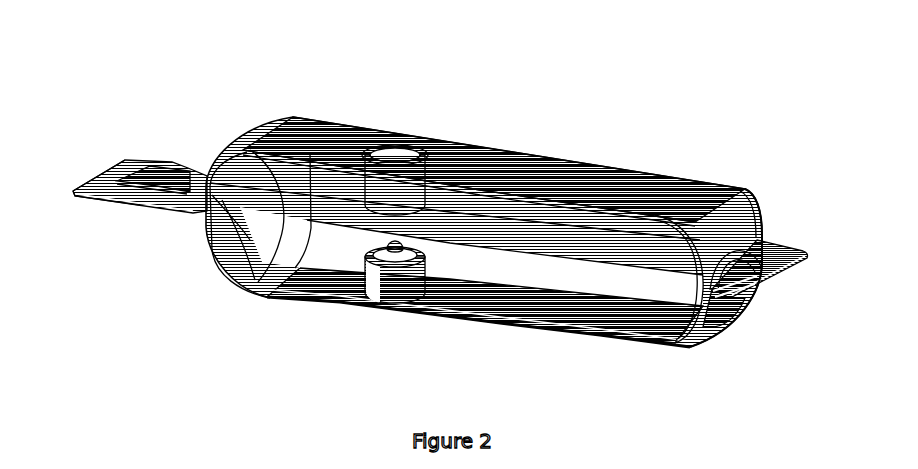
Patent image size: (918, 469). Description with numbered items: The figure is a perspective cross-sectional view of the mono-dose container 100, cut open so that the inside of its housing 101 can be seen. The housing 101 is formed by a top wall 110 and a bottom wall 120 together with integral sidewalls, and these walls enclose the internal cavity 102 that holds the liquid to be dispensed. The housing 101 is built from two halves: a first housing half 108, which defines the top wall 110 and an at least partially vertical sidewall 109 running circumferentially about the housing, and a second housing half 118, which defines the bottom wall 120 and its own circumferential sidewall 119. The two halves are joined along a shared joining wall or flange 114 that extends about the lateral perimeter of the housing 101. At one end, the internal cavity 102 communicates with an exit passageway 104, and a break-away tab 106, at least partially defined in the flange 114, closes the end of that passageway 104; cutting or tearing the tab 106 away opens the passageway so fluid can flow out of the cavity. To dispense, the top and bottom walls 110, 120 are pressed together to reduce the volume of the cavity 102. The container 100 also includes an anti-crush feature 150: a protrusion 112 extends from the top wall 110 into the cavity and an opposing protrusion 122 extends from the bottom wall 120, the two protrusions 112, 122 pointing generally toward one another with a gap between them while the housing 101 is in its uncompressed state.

The container 100 is at (633, 118).
The housing 101 is at (522, 175).
The top wall 110 is at (469, 188).
The internal cavity 102 is at (556, 280).
The passageway 104 is at (180, 186).
The break-away tab 106 is at (120, 170).
The first housing half 108 is at (743, 203).
The sidewall 109 is at (737, 224).
The protrusion 112 is at (395, 192).
The flange 114 is at (97, 183).
The second housing half 118 is at (757, 318).
The sidewall 119 is at (723, 322).
The bottom wall 120 is at (475, 305).
The protrusion 122 is at (388, 287).
The anti-crush feature 150 is at (397, 153).